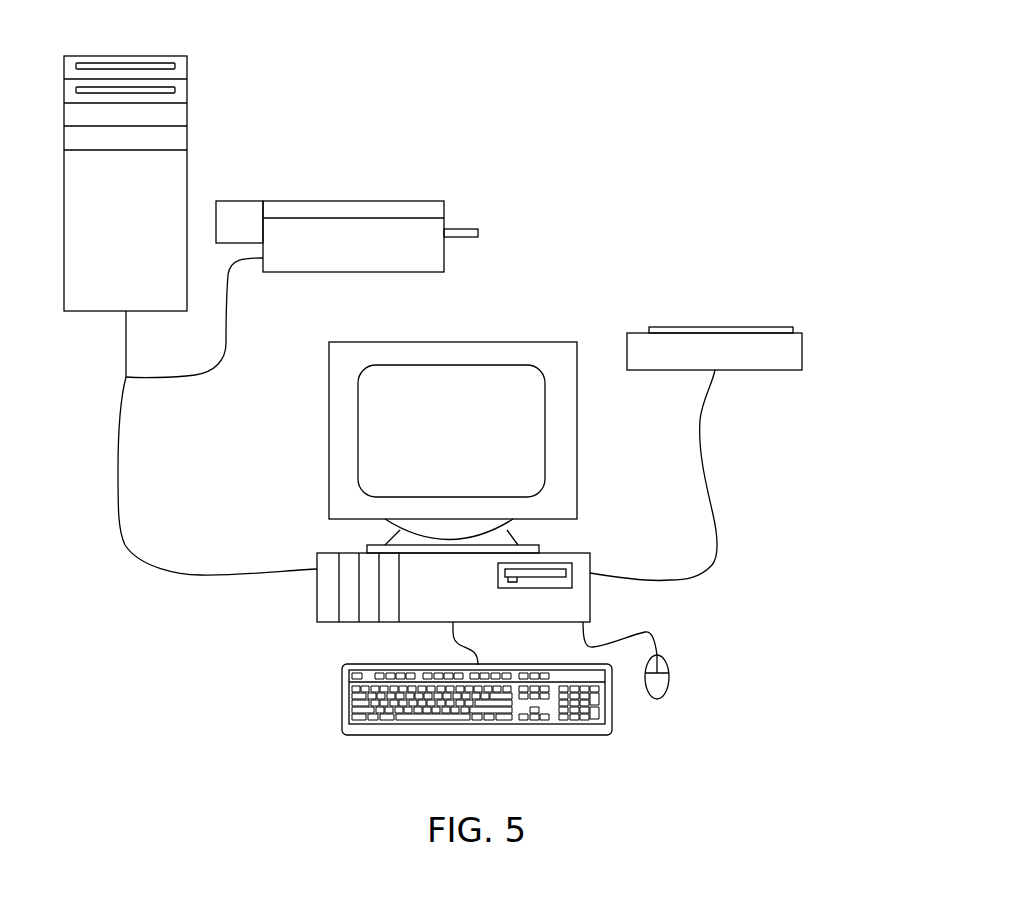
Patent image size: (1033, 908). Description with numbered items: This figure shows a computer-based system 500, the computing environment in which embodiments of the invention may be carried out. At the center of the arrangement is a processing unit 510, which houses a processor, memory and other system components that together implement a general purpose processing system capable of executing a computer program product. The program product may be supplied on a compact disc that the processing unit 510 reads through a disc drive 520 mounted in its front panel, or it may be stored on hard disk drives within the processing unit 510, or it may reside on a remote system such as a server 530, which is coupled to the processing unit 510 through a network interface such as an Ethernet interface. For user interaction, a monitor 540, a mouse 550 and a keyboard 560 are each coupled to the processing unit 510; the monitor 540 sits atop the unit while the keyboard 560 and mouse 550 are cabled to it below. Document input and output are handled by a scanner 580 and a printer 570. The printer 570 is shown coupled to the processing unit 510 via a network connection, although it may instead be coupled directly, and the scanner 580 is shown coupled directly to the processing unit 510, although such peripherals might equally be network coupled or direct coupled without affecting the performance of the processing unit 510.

The computer-based system 500 is at (613, 98).
The processing unit 510 is at (317, 605).
The disc drive 520 is at (572, 575).
The server 530 is at (187, 177).
The monitor 540 is at (528, 342).
The mouse 550 is at (669, 685).
The keyboard 560 is at (342, 698).
The printer 570 is at (397, 201).
The scanner 580 is at (743, 327).